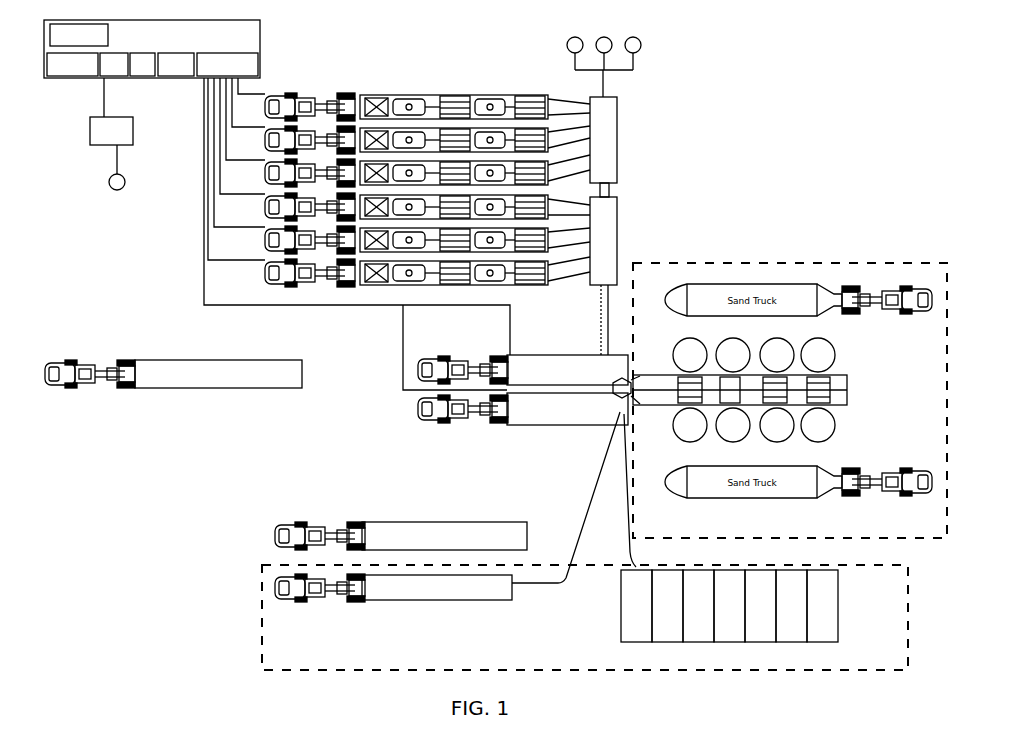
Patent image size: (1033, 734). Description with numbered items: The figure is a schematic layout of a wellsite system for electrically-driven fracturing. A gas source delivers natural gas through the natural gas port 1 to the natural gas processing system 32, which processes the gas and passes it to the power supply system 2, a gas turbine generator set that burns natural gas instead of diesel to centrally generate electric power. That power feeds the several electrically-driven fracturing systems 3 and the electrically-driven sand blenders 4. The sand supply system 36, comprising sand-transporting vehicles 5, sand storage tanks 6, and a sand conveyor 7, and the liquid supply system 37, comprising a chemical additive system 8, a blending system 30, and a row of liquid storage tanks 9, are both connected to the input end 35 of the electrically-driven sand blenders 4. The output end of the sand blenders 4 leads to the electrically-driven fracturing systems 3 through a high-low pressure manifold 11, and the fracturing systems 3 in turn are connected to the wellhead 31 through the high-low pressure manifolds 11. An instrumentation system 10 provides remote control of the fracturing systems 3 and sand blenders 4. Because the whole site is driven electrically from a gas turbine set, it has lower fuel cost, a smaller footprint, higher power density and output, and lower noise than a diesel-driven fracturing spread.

The natural gas port 1 is at (104, 190).
The power supply system 2 is at (265, 50).
The electrically-driven fracturing system 3 is at (432, 88).
The electrically-driven sand blender 4 is at (550, 432).
The sand-transporting vehicle 5 is at (773, 272).
The sand storage tank 6 is at (838, 353).
The sand conveyor 7 is at (848, 390).
The chemical additive system 8 is at (422, 603).
The liquid storage tank 9 is at (838, 628).
The instrumentation system 10 is at (180, 392).
The high-low pressure manifold 11 is at (620, 127).
The blending system 30 is at (272, 532).
The wellhead 31 is at (650, 38).
The natural gas processing system 32 is at (88, 140).
The input end 35 is at (612, 347).
The sand supply system 36 is at (836, 250).
The liquid supply system 37 is at (262, 630).